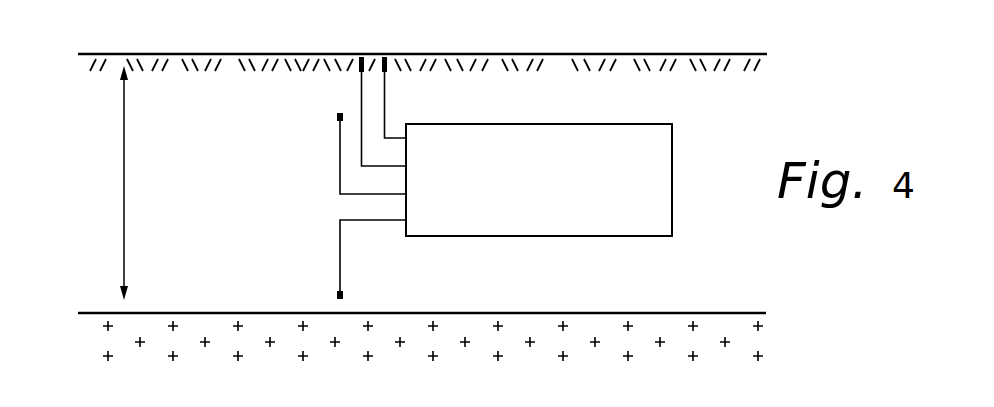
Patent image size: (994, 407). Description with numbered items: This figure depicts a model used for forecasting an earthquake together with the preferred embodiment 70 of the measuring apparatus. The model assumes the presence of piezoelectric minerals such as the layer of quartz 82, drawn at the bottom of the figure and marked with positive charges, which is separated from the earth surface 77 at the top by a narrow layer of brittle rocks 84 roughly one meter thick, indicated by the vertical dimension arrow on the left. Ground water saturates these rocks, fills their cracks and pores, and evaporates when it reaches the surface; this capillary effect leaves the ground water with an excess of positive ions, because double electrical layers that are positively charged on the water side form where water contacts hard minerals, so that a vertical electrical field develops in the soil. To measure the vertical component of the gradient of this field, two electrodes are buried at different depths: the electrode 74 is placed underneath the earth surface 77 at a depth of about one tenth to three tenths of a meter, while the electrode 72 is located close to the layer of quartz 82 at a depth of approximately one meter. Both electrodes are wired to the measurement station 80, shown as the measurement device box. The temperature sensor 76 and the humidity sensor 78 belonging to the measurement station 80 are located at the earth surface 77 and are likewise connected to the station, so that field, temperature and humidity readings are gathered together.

The preferred embodiment 70 is at (260, 197).
The electrode 72 is at (337, 295).
The electrode 74 is at (337, 116).
The temperature sensor 76 is at (359, 70).
The earth surface 77 is at (410, 53).
The humidity sensor 78 is at (387, 68).
The measurement station 80 is at (516, 123).
The layer of quartz 82 is at (514, 350).
The layer of brittle rocks 84 is at (125, 155).